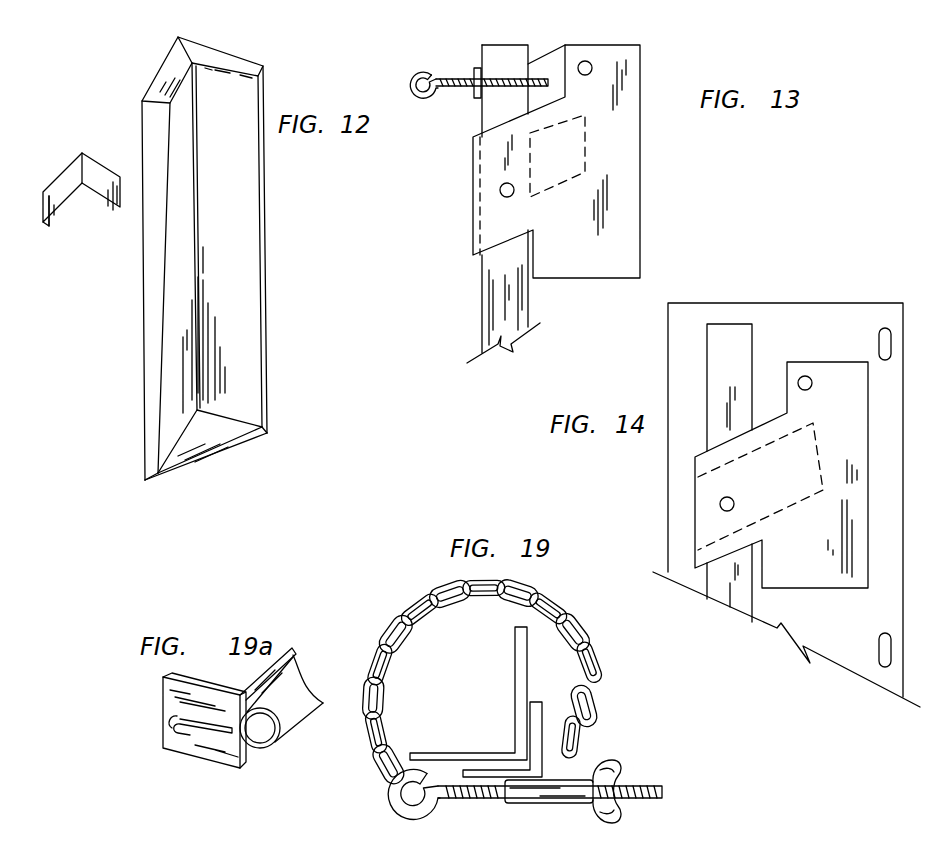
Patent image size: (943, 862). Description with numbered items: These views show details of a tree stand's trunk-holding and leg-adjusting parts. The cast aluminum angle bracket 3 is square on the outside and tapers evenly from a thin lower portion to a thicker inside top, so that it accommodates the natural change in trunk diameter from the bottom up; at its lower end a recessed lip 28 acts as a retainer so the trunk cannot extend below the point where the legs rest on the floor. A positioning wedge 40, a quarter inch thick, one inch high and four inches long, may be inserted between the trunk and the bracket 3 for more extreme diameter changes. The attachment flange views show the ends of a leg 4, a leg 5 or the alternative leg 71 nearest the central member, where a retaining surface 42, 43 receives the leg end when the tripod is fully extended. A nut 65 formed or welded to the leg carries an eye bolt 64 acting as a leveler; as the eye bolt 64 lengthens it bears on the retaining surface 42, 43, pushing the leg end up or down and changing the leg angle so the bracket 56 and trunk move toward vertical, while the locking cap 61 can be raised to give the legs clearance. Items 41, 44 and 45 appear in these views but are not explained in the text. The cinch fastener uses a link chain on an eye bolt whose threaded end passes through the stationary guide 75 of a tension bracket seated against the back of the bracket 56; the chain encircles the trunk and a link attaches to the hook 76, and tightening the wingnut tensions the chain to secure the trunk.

In FIG. 12, the angle bracket 3 is at (142, 288).
In FIG. 12, the recessed lip 28 is at (217, 458).
In FIG. 12, the positioning wedge 40 is at (61, 224).
In FIG. 13, the leg 5 is at (482, 295).
In FIG. 13, the leg 71 is at (548, 52).
In FIG. 13, the eye bolt 64 is at (424, 72).
In FIG. 13, the nut 65 is at (476, 67).
In FIG. 13, the locking cap 61 is at (512, 78).
In FIG. 13, the hole 41 is at (589, 61).
In FIG. 14, the hole 41 is at (812, 386).
In FIG. 13, the retaining surface 43 is at (575, 163).
In FIG. 14, the panel 45 is at (815, 303).
In FIG. 14, the slot 44 is at (886, 327).
In FIG. 14, the leg 4 is at (718, 364).
In FIG. 14, the retaining surface 42 is at (790, 503).
In FIG. 19, the angle bracket 56 is at (513, 680).
In FIG. 19a, the hook 76 is at (163, 750).
In FIG. 19a, the stationary guide 75 is at (268, 728).